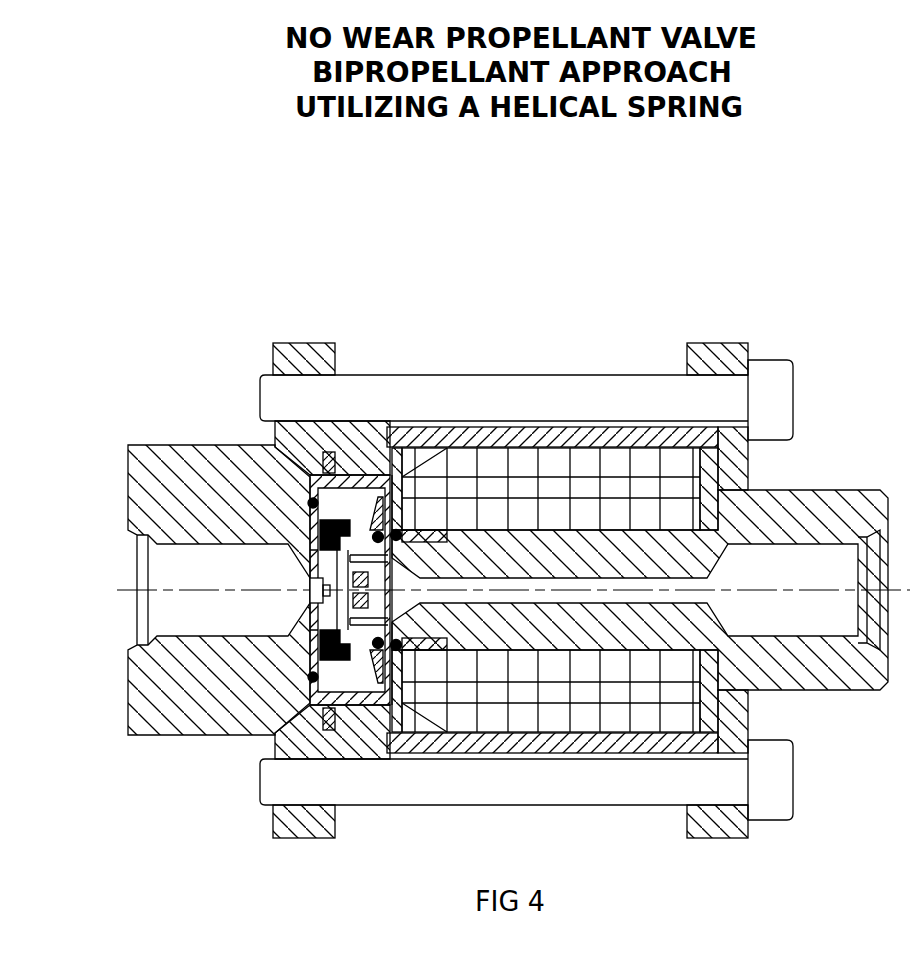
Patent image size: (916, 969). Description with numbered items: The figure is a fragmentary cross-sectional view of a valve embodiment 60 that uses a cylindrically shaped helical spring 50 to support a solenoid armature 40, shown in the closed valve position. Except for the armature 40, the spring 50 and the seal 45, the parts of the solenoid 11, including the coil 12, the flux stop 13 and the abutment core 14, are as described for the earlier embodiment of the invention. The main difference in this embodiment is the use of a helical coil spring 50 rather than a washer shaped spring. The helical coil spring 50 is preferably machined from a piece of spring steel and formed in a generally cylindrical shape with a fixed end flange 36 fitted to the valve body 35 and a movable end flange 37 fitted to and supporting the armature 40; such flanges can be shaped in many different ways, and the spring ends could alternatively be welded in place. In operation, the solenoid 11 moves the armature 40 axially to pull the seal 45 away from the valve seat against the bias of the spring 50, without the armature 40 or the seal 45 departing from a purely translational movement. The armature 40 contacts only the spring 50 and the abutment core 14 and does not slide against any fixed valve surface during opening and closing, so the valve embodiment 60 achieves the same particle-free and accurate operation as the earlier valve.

The solenoid 11 is at (537, 348).
The coil 12 is at (586, 466).
The flux stop 13 is at (647, 553).
The abutment core 14 is at (398, 530).
The valve body 35 is at (172, 440).
The fixed end flange 36 is at (308, 478).
The movable end flange 37 is at (326, 453).
The solenoid armature 40 is at (377, 510).
The seal 45 is at (323, 672).
The helical coil spring 50 is at (345, 670).
The valve embodiment 60 is at (380, 340).